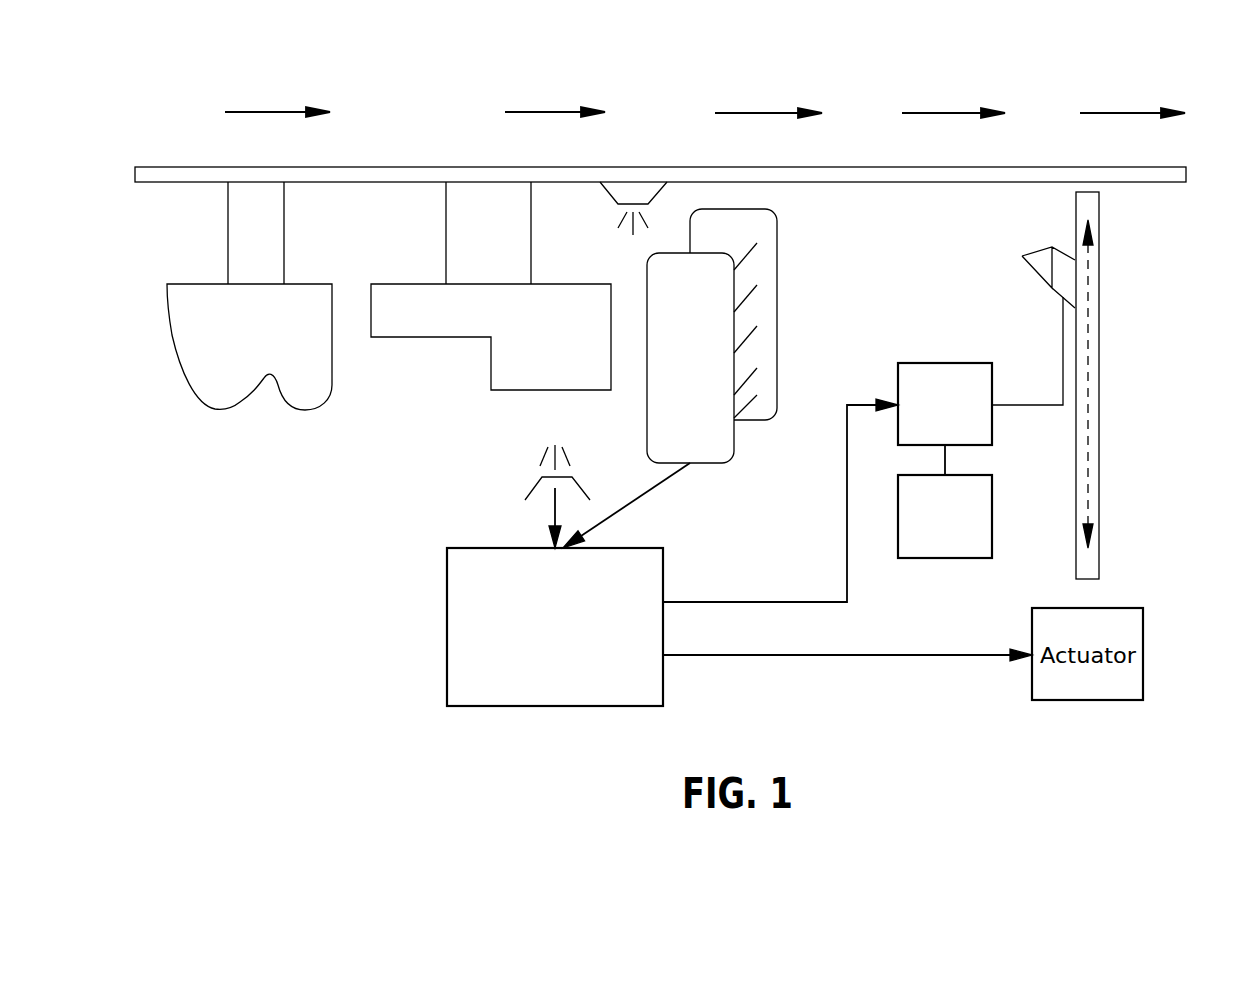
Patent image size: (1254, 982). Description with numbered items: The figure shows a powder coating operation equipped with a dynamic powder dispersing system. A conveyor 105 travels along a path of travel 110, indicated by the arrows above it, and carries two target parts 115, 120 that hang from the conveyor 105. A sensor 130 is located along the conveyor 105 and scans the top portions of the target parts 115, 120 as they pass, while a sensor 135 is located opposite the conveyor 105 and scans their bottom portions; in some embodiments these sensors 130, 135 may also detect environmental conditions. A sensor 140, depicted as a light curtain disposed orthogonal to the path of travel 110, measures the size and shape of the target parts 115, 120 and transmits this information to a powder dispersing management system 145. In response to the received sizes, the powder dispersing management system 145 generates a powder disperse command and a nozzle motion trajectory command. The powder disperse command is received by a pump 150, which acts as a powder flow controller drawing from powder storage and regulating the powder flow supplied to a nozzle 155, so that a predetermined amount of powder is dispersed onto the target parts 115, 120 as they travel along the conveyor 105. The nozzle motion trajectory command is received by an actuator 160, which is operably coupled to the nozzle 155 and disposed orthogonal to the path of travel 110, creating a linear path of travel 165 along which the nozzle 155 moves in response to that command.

The conveyor 105 is at (160, 167).
The path of travel 110 is at (270, 112).
The target part 115 is at (213, 410).
The target part 120 is at (432, 337).
The sensor 130 is at (633, 190).
The sensor 135 is at (537, 483).
The sensor 140 is at (718, 463).
The powder dispersing management system 145 is at (557, 706).
The pump 150 is at (932, 363).
The nozzle 155 is at (1049, 287).
The actuator 160 is at (1099, 350).
The linear path of travel 165 is at (1087, 453).